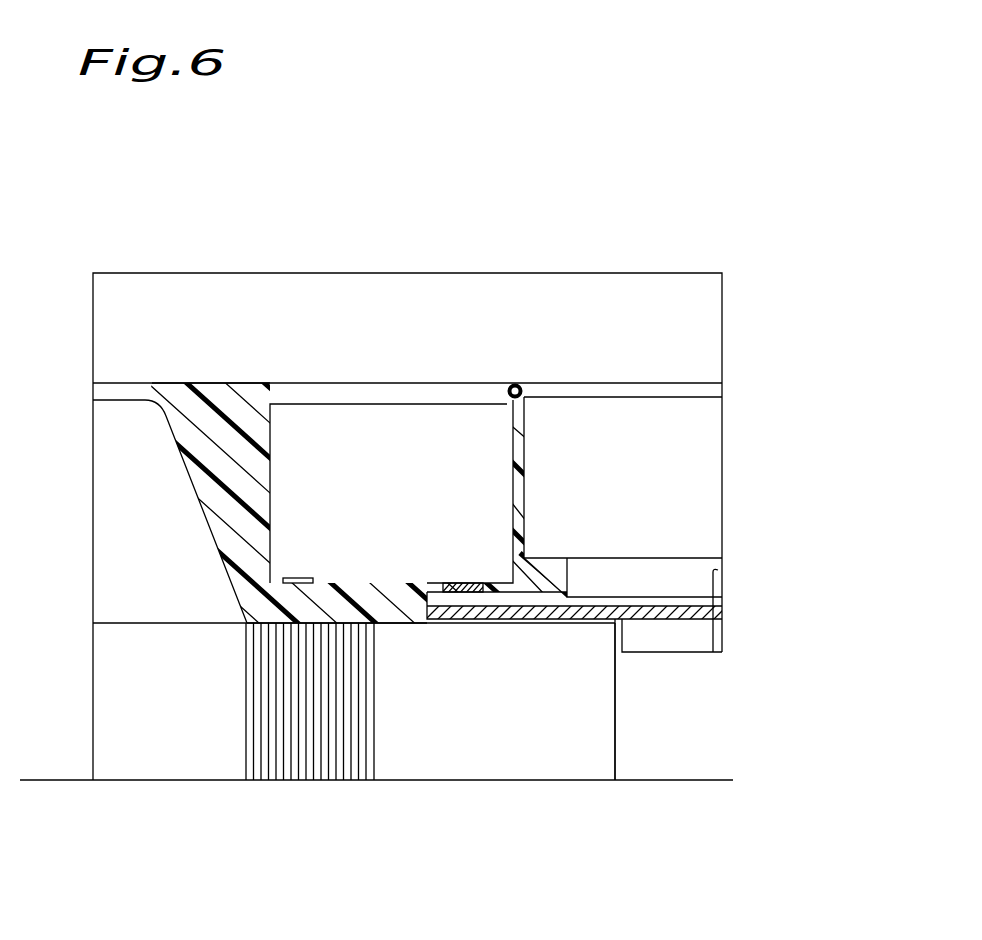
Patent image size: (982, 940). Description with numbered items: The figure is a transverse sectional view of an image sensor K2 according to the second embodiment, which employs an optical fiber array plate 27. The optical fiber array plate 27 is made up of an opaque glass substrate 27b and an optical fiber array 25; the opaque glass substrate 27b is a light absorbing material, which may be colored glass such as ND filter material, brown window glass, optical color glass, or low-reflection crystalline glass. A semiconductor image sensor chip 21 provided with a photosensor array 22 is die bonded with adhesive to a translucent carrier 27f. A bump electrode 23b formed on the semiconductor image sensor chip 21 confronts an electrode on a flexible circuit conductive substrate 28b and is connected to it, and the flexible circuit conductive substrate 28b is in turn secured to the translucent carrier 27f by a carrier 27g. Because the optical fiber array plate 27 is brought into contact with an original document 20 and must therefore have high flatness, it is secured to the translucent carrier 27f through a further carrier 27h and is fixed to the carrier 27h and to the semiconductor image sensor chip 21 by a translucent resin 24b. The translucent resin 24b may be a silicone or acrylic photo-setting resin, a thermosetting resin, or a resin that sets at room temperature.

The image sensor K2 is at (787, 381).
The translucent carrier 27f is at (530, 313).
The carrier 27h is at (130, 420).
The carrier 27g is at (642, 417).
The semiconductor image sensor chip 21 is at (353, 437).
The photosensor array 22 is at (297, 577).
The bump electrode 23b is at (462, 595).
The flexible circuit conductive substrate 28b is at (720, 612).
The optical fiber array plate 27 is at (82, 692).
The opaque glass substrate 27b is at (143, 762).
The optical fiber array 25 is at (284, 772).
The translucent resin 24b is at (378, 615).
The original document 20 is at (712, 795).